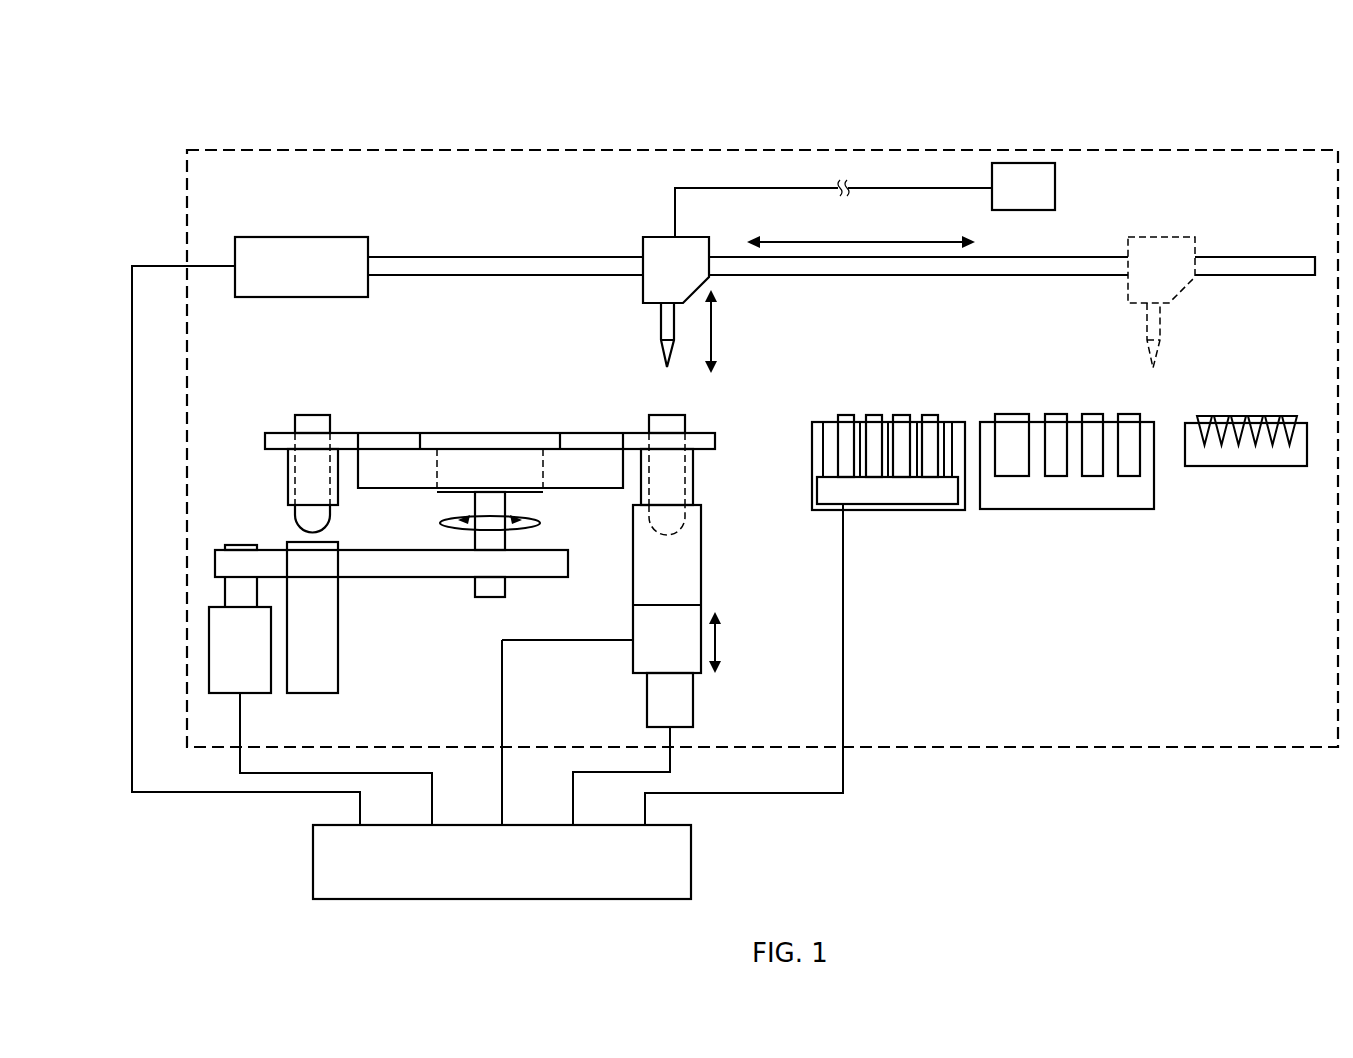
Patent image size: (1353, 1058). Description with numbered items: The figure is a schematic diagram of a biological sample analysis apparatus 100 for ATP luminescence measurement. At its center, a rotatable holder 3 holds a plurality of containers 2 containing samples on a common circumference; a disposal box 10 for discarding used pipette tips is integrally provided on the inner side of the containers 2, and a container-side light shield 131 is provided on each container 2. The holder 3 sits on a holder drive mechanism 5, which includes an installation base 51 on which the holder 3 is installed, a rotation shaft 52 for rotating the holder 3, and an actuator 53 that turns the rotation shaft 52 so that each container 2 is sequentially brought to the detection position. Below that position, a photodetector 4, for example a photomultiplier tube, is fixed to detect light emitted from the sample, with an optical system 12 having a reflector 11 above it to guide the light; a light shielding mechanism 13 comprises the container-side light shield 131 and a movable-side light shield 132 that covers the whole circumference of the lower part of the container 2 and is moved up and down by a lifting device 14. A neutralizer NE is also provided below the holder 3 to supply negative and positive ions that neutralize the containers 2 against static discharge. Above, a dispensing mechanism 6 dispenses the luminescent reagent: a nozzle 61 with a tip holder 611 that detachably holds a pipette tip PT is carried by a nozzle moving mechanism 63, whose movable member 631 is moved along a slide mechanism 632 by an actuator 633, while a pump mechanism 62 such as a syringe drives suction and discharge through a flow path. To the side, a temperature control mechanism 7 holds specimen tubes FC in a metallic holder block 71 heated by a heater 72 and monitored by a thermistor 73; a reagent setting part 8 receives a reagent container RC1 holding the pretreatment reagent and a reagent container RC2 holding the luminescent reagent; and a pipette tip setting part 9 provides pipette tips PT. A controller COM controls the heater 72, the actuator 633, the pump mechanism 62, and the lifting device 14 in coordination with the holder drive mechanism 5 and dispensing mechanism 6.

The biological sample analysis apparatus 100 is at (248, 117).
The dispensing mechanism 6 is at (639, 166).
The nozzle moving mechanism 63 is at (429, 238).
The movable member 631 is at (643, 248).
The slide mechanism 632 is at (500, 257).
The actuator 633 is at (302, 237).
The pump mechanism 62 is at (1057, 188).
The nozzle 61 is at (602, 335).
The tip holder 611 is at (659, 322).
The container 2 is at (312, 415).
The holder 3 is at (480, 433).
The container-side light shield 131 is at (288, 478).
The disposal box 10 is at (597, 488).
The holder drive mechanism 5 is at (400, 652).
The installation base 51 is at (437, 492).
The rotation shaft 52 is at (473, 590).
The actuator 53 is at (357, 603).
The light shielding mechanism 13 is at (720, 511).
The movable-side light shield 132 is at (729, 589).
The reflector 11 is at (703, 573).
The optical system 12 is at (722, 594).
The photodetector 4 is at (633, 665).
The lifting device 14 is at (693, 686).
The temperature control mechanism 7 is at (895, 493).
The holder block 71 is at (875, 505).
The heater 72 is at (907, 502).
The thermistor 73 is at (888, 446).
The reagent setting part 8 is at (1065, 509).
The pipette tip setting part 9 is at (1245, 466).
The pipette tip PT is at (669, 370).
The specimen tube FC is at (928, 415).
The reagent container RC1 is at (1128, 414).
The reagent container RC2 is at (1012, 414).
The neutralizer NE is at (313, 695).
The controller COM is at (500, 903).